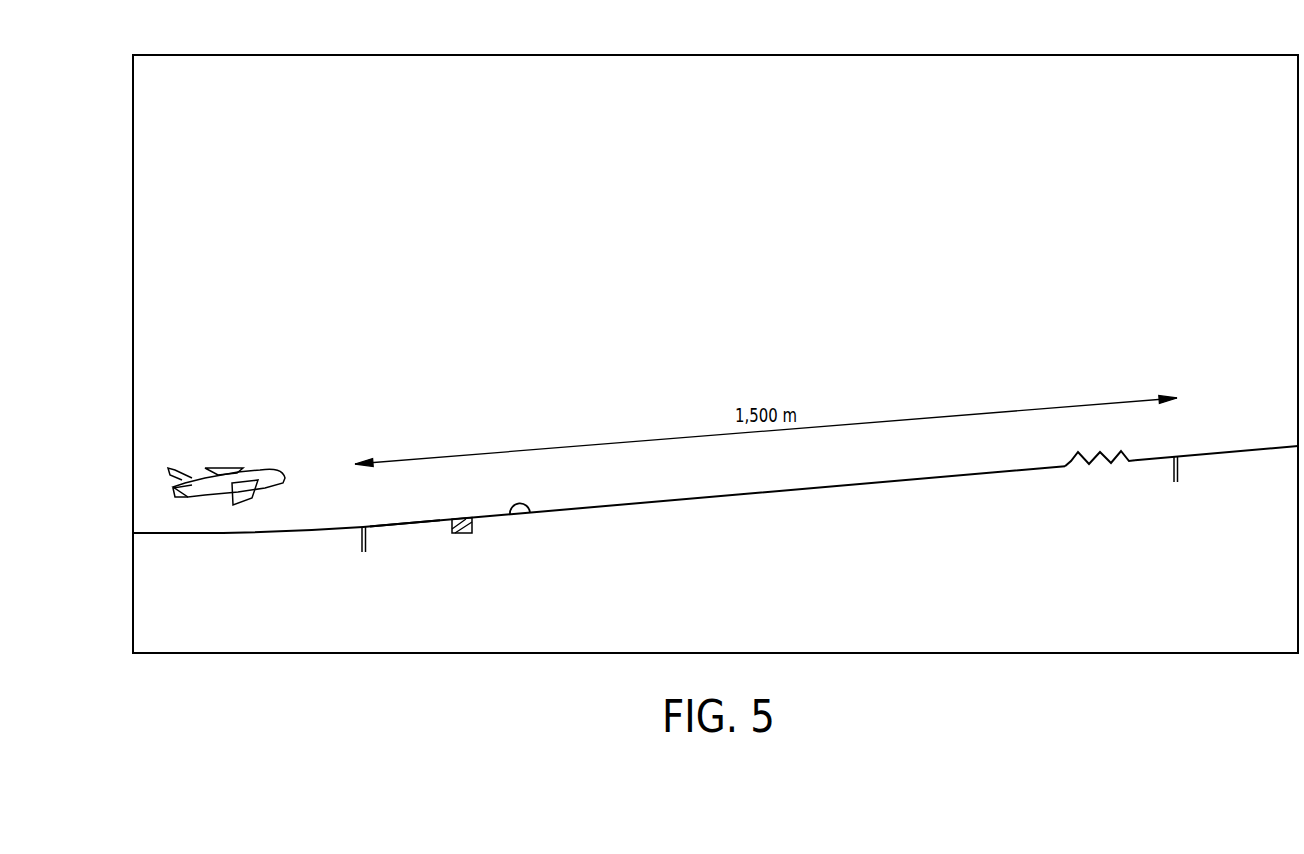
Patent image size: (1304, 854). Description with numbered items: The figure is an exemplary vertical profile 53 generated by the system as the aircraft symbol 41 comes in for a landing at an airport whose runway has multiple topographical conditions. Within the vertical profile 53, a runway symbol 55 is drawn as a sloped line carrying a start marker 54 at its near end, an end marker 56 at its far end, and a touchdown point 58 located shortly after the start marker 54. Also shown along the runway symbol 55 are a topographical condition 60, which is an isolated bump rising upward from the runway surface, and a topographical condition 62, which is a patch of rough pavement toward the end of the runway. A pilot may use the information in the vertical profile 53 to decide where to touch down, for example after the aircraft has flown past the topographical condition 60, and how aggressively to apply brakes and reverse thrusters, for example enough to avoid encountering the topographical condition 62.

The vertical profile 53 is at (588, 55).
The aircraft symbol 41 is at (256, 467).
The start marker 54 is at (362, 544).
The runway symbol 55 is at (410, 521).
The end marker 56 is at (1178, 472).
The touchdown point 58 is at (460, 534).
The topographical condition 60 is at (530, 504).
The topographical condition 62 is at (1133, 473).